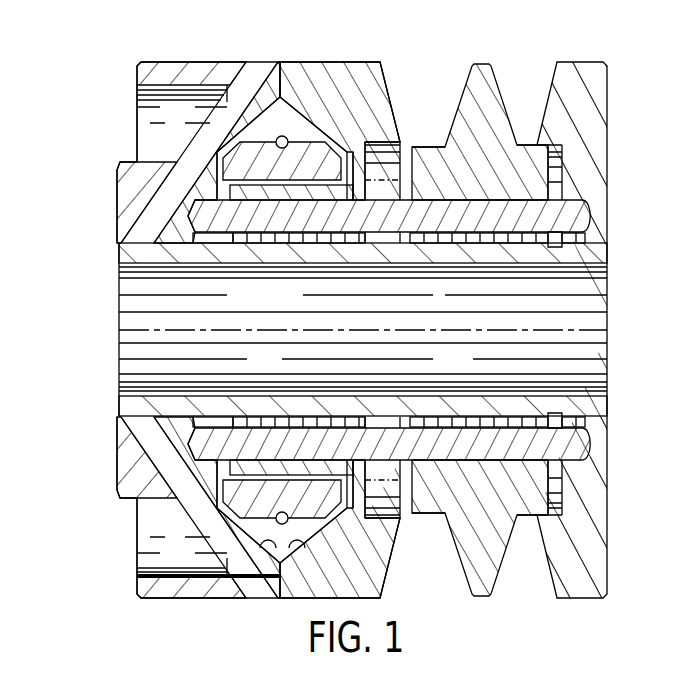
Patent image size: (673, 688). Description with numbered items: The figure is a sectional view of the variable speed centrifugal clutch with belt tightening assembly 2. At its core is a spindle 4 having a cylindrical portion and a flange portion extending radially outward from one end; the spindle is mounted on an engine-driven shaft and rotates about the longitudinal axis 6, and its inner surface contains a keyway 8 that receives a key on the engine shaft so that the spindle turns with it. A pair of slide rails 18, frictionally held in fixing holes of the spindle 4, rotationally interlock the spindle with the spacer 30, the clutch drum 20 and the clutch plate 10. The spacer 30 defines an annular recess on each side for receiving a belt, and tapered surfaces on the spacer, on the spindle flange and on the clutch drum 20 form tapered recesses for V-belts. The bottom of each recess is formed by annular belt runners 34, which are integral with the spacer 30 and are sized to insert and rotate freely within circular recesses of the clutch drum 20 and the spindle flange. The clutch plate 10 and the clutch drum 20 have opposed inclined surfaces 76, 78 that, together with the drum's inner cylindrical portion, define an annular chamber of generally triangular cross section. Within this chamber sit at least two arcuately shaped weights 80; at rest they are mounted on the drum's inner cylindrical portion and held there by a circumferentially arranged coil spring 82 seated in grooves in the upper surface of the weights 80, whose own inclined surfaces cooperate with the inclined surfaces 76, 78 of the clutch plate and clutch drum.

The assembly 2 is at (119, 330).
The spindle 4 is at (578, 64).
The longitudinal axis 6 is at (607, 332).
The keyway 8 is at (603, 338).
The clutch plate 10 is at (159, 62).
The slide rails 18 is at (591, 447).
The clutch drum 20 is at (357, 65).
The spacer 30 is at (482, 70).
The annular belt runners 34 is at (522, 145).
The inclined surface 76 is at (253, 578).
The inclined surface 78 is at (297, 552).
The arcuately shaped weights 80 is at (259, 147).
The coil spring 82 is at (284, 136).